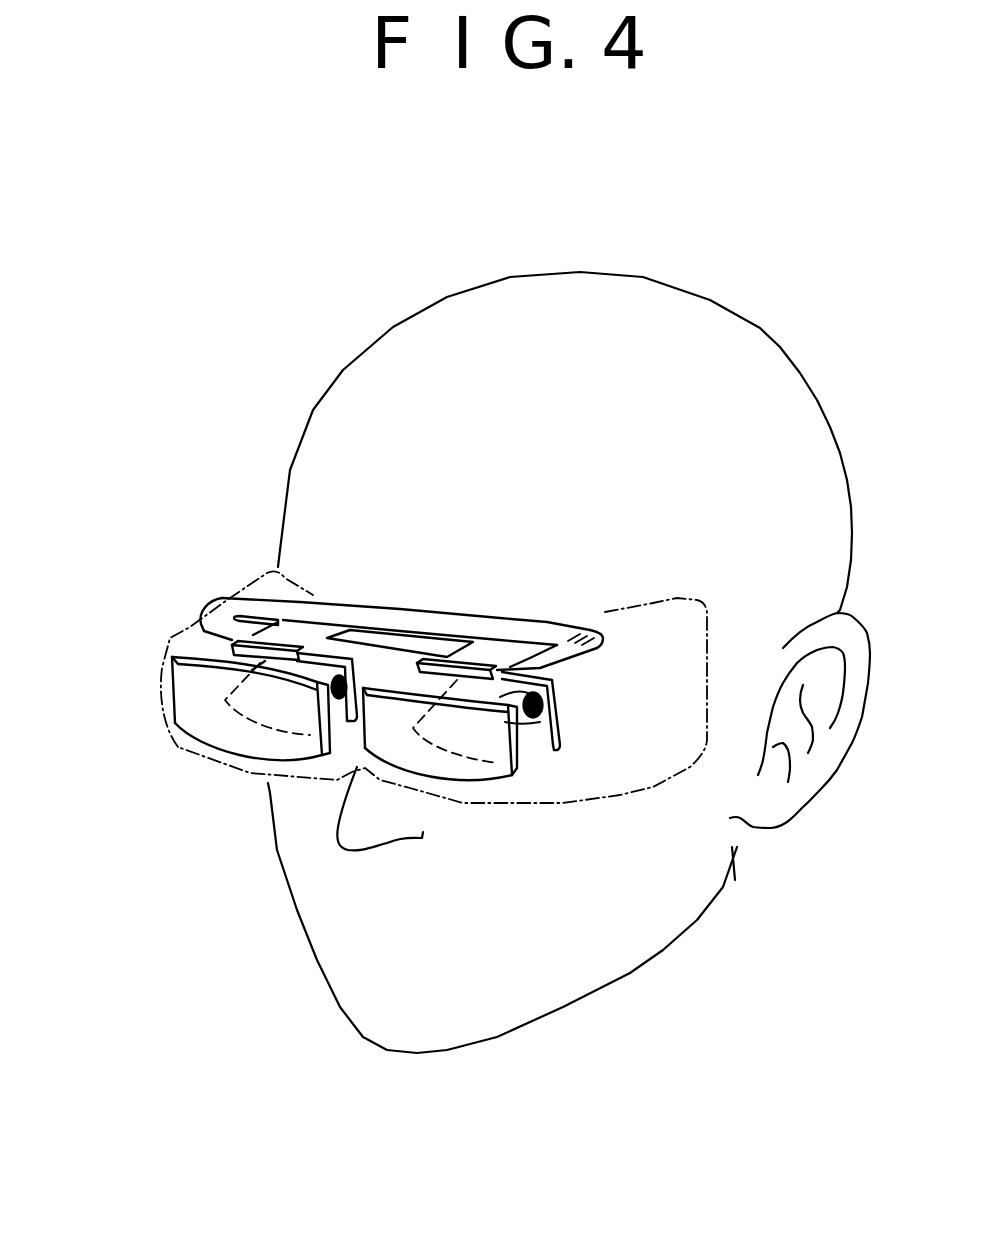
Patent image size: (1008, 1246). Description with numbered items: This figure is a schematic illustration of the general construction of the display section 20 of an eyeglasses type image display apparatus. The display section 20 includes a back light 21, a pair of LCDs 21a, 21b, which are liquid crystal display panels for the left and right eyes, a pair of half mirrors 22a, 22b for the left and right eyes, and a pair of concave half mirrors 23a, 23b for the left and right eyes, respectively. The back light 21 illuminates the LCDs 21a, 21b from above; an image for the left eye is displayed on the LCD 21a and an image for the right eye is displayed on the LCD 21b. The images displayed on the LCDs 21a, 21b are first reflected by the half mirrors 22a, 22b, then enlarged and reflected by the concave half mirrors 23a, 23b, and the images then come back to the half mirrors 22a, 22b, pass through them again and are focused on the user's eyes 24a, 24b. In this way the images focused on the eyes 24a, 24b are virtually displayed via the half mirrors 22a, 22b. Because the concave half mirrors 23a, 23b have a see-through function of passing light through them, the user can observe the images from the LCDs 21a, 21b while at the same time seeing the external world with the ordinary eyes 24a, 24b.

The display section 20 is at (228, 853).
The back light 21 is at (517, 627).
The LCD for the left eye 21a is at (487, 652).
The LCD for the right eye 21b is at (242, 622).
The half mirror for the left eye 22a is at (540, 745).
The half mirror for the right eye 22b is at (178, 640).
The concave half mirror for the left eye 23a is at (490, 773).
The concave half mirror for the right eye 23b is at (202, 723).
The user's eye 24a is at (543, 710).
The user's eye 24b is at (338, 680).